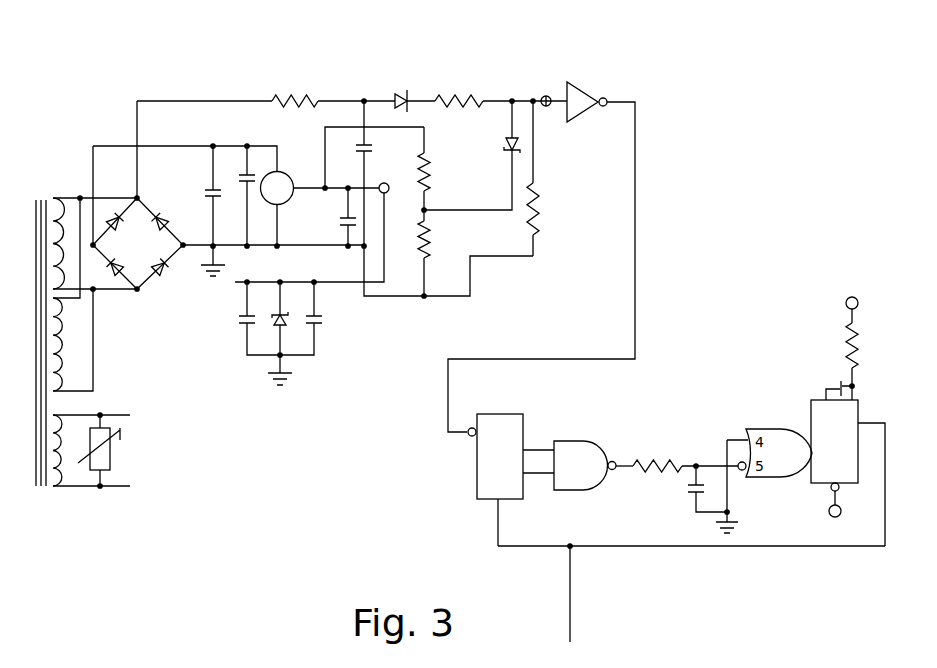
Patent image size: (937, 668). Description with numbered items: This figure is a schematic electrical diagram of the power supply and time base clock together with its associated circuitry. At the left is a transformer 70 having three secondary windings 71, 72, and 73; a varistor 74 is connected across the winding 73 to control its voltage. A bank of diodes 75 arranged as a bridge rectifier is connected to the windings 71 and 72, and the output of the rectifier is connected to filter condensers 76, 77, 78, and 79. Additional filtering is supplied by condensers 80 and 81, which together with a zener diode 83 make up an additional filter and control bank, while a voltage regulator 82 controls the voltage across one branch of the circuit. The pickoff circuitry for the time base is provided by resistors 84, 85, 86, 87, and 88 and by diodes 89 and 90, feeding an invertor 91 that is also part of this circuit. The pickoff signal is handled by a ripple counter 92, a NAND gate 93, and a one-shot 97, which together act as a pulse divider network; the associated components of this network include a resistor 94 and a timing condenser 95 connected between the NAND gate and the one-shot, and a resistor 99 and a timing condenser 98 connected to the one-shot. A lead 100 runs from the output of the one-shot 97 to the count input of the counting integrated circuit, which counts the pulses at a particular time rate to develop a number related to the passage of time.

The transformer 70 is at (30, 196).
The secondary winding 71 is at (66, 207).
The secondary winding 72 is at (62, 350).
The secondary winding 73 is at (65, 463).
The varistor 74 is at (111, 455).
The bank of diodes 75 is at (170, 276).
The filter condenser 76 is at (208, 185).
The filter condenser 77 is at (246, 170).
The filter condenser 78 is at (369, 150).
The filter condenser 79 is at (342, 222).
The condenser 80 is at (243, 325).
The condenser 81 is at (318, 325).
The voltage regulator 82 is at (288, 176).
The zener diode 83 is at (275, 322).
The resistor 84 is at (292, 91).
The resistor 85 is at (457, 91).
The resistor 86 is at (430, 171).
The resistor 87 is at (431, 252).
The resistor 88 is at (537, 228).
The diode 89 is at (397, 90).
The diode 90 is at (508, 137).
The invertor 91 is at (589, 89).
The ripple counter 92 is at (525, 420).
The NAND gate 93 is at (605, 449).
The resistor 94 is at (657, 462).
The timing condenser 95 is at (692, 488).
The one-shot 97 is at (861, 407).
The timing condenser 98 is at (838, 382).
The resistor 99 is at (859, 350).
The lead 100 is at (572, 623).